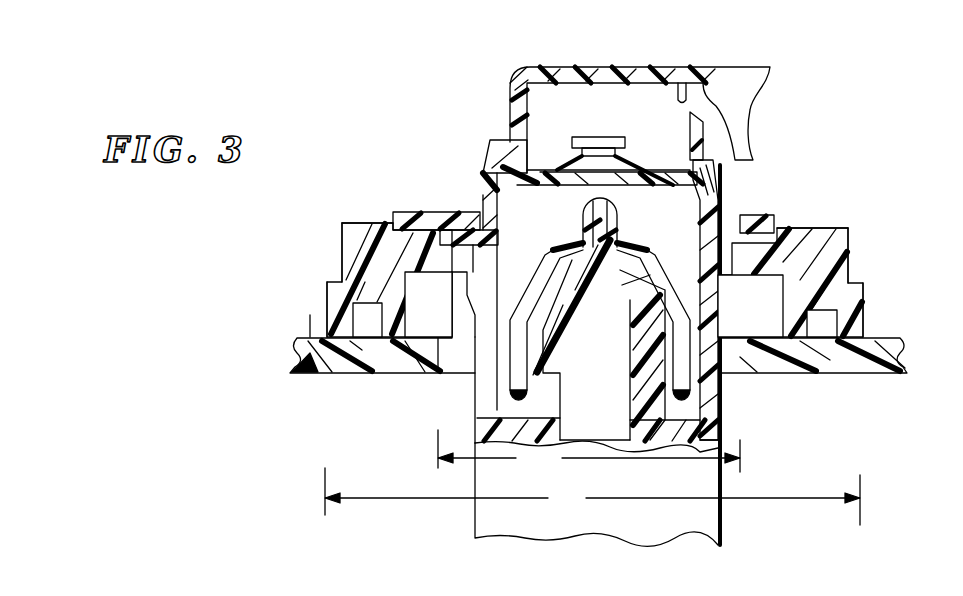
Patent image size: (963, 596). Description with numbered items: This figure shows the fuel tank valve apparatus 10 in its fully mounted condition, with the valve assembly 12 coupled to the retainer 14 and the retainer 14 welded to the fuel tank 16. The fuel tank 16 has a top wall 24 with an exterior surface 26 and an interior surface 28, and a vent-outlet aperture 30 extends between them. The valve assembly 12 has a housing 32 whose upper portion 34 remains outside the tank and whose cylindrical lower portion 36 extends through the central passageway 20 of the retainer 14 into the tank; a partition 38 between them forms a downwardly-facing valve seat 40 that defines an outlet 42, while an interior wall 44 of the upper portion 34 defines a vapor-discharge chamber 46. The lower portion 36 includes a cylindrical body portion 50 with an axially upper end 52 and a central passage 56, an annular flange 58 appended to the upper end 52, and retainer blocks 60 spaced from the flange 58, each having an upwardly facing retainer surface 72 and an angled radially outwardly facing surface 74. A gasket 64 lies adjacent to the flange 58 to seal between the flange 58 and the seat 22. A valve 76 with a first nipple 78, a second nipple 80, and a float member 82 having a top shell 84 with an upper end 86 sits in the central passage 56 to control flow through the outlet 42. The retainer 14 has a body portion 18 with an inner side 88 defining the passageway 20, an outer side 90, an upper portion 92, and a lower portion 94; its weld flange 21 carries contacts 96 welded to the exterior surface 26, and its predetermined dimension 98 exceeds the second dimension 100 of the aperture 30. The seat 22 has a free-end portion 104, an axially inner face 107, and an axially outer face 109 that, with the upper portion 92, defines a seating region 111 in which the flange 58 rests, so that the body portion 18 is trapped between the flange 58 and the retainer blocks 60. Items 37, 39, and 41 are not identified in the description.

The fuel tank valve apparatus 10 is at (812, 124).
The valve assembly 12 is at (498, 90).
The retainer 14 is at (848, 229).
The fuel tank 16 is at (288, 362).
The body portion 18 is at (855, 278).
The central passageway 20 is at (750, 348).
The weld flange 21 is at (328, 277).
The seat 22 is at (400, 237).
The top wall 24 is at (293, 326).
The exterior surface 26 is at (311, 322).
The interior surface 28 is at (343, 374).
The vent-outlet aperture 30 is at (448, 372).
The housing 32 is at (470, 527).
The upper portion 34 is at (760, 60).
The lower portion 36 is at (500, 483).
The cap foot 37 is at (500, 136).
The partition 38 is at (551, 143).
The cap wall 39 is at (546, 66).
The valve seat 40 is at (612, 180).
The cap top 41 is at (730, 72).
The outlet 42 is at (599, 132).
The interior wall 44 is at (690, 95).
The vapor-discharge chamber 46 is at (634, 108).
The body portion 50 is at (747, 540).
The axially upper end 52 is at (705, 202).
The central passage 56 is at (508, 194).
The flange 58 is at (390, 216).
The retainer block 60 is at (480, 291).
The gasket 64 is at (447, 235).
The retainer surface 72 is at (499, 262).
The radially outwardly facing surface 74 is at (470, 309).
The valve 76 is at (610, 464).
The first nipple 78 is at (584, 224).
The second nipple 80 is at (608, 373).
The float member 82 is at (685, 441).
The top shell 84 is at (634, 402).
The upper end 86 is at (630, 355).
The inner side 88 is at (418, 332).
The outer side 90 is at (341, 227).
The upper portion 92 is at (347, 219).
The lower portion 94 is at (427, 375).
The contacts 96 is at (320, 373).
The predetermined dimension 98 is at (592, 496).
The second dimension 100 is at (589, 451).
The free-end portion 104 is at (500, 255).
The axially inner face 107 is at (400, 287).
The axially outer face 109 is at (443, 212).
The seating region 111 is at (388, 220).